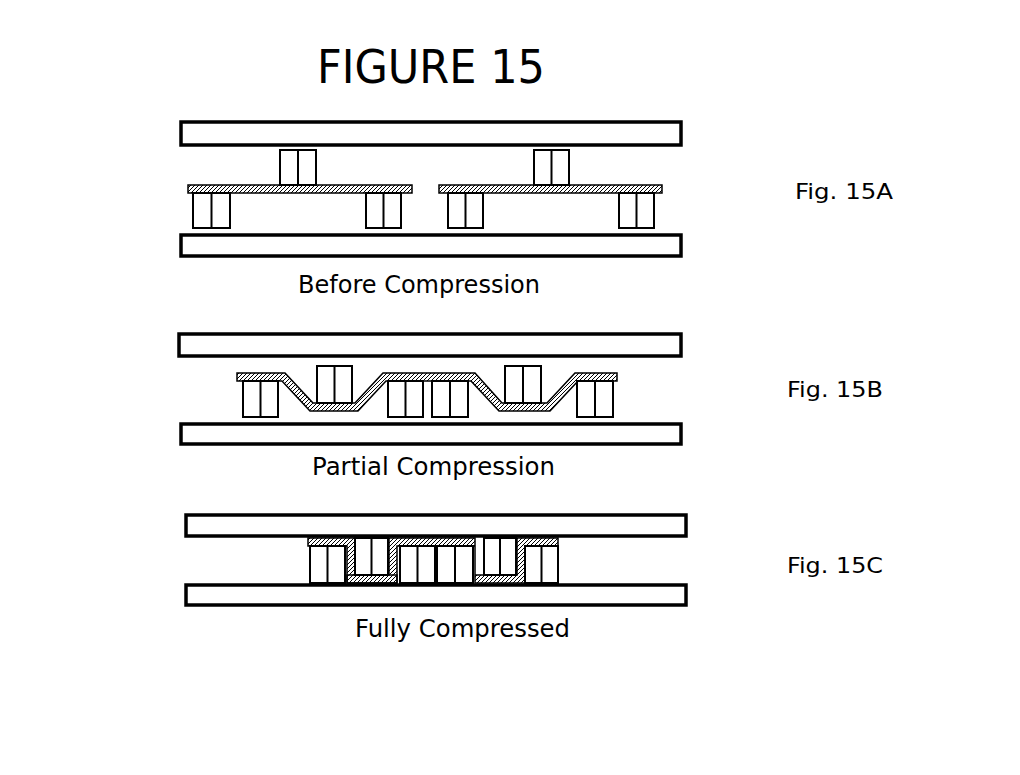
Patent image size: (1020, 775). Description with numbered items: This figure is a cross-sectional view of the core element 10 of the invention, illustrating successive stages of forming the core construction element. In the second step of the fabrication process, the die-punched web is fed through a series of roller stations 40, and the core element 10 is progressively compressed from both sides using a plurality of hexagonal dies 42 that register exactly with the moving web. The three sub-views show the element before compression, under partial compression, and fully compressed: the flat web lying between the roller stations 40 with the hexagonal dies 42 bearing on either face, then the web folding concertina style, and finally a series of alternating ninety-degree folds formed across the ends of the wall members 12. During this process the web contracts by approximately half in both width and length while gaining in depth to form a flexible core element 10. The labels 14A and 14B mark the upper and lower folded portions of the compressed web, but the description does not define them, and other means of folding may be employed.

In FIG. 15A, the core element 10 is at (497, 145).
In FIG. 15B, the core element 10 is at (639, 370).
In FIG. 15C, the wall members 12 is at (532, 555).
In FIG. 15C, the upper film segment 14A is at (308, 542).
In FIG. 15C, the lower film segment 14B is at (347, 582).
In FIG. 15A, the roller stations 40 is at (172, 130).
In FIG. 15B, the roller stations 40 is at (177, 345).
In FIG. 15C, the roller stations 40 is at (182, 524).
In FIG. 15A, the hexagonal dies 42 is at (485, 213).